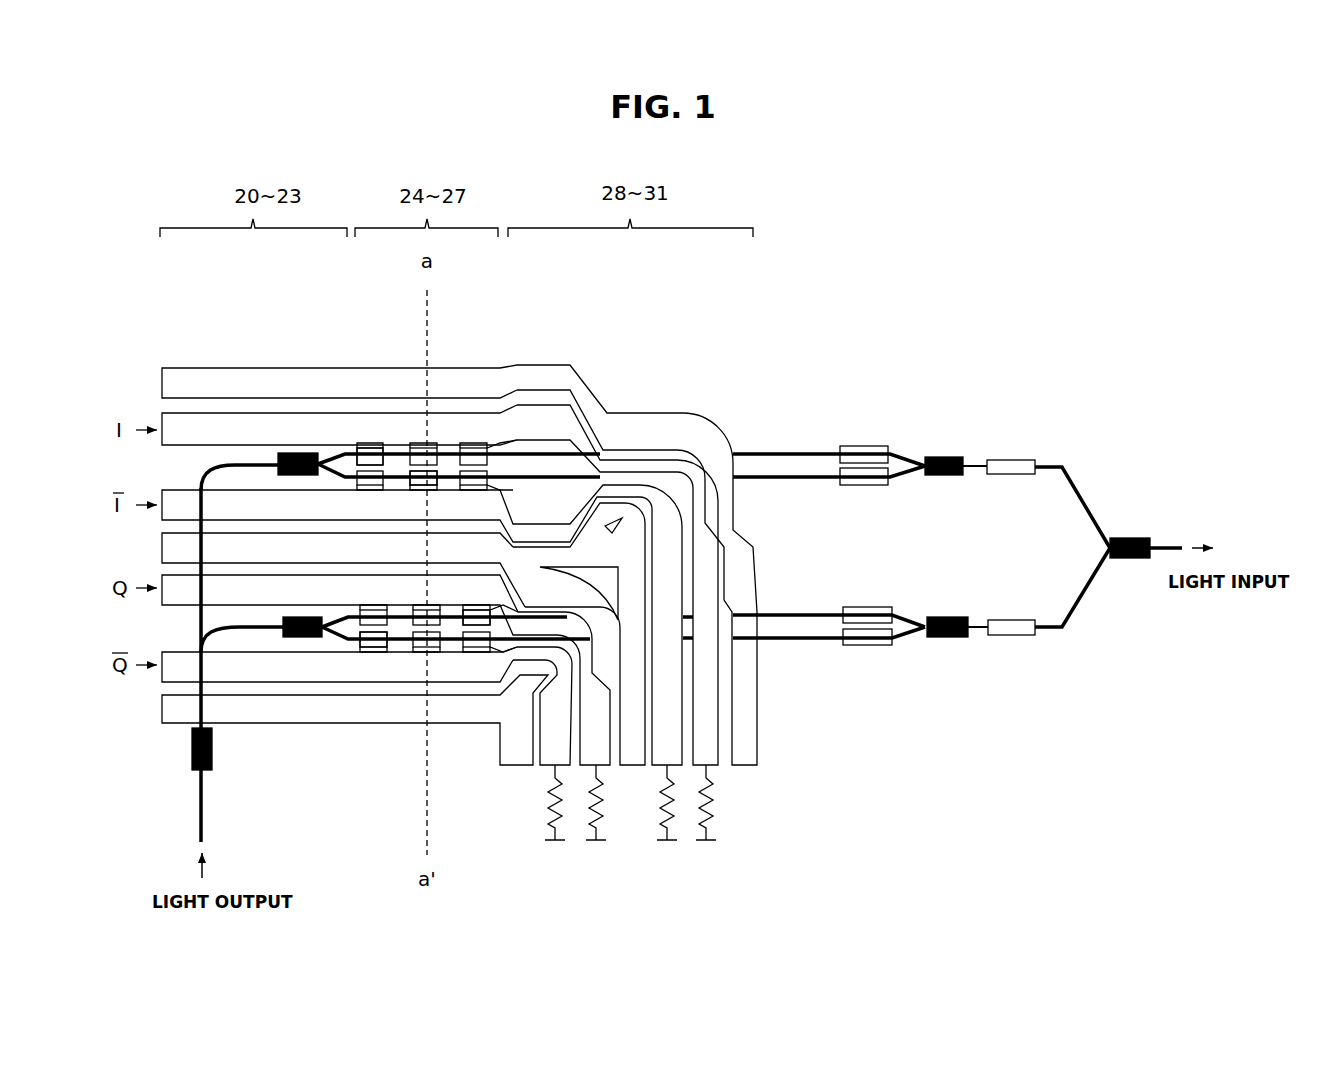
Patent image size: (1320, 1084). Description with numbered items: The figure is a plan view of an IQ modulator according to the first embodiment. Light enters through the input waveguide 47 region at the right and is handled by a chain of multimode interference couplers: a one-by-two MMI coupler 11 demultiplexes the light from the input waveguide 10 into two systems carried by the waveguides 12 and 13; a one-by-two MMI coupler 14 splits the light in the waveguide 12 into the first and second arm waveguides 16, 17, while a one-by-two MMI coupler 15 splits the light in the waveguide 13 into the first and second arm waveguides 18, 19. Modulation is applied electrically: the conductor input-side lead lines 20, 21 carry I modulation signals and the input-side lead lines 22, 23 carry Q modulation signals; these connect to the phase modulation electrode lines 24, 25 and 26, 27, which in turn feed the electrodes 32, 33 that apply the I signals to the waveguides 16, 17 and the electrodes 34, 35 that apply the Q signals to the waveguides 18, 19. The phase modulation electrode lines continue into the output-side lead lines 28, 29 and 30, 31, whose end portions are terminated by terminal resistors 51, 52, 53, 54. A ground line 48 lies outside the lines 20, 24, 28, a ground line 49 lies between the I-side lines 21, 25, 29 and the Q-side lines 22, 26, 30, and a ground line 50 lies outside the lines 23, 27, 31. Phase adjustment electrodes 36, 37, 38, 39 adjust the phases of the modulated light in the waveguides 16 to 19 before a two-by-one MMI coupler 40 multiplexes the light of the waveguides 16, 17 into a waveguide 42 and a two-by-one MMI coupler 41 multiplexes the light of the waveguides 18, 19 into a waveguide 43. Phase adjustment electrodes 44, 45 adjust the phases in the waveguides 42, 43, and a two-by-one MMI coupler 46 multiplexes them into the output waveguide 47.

The input waveguide 10 is at (198, 827).
The 1x2 MMI coupler 11 is at (196, 773).
The waveguide 12 is at (198, 622).
The waveguide 13 is at (237, 632).
The 1x2 MMI coupler 14 is at (293, 450).
The 1x2 MMI coupler 15 is at (303, 637).
The first arm waveguide 16 is at (342, 452).
The second arm waveguide 17 is at (402, 471).
The first arm waveguide 18 is at (348, 620).
The second arm waveguide 19 is at (403, 645).
The first input-side lead line 20 is at (202, 420).
The second input-side lead line 21 is at (253, 505).
The first input-side lead line 22 is at (266, 592).
The second input-side lead line 23 is at (243, 668).
The first phase modulation electrode line 24 is at (445, 424).
The second phase modulation electrode line 25 is at (485, 472).
The first phase modulation electrode line 26 is at (444, 593).
The second phase modulation electrode line 27 is at (483, 668).
The first output-side lead line 28 is at (561, 427).
The second output-side lead line 29 is at (554, 505).
The first output-side lead line 30 is at (524, 608).
The second output-side lead line 31 is at (521, 652).
The first electrode 32 is at (370, 458).
The second electrode 33 is at (448, 505).
The first electrode 34 is at (479, 598).
The second electrode 35 is at (377, 640).
The phase adjustment electrode 36 is at (851, 443).
The phase adjustment electrode 37 is at (849, 487).
The phase adjustment electrode 38 is at (851, 606).
The phase adjustment electrode 39 is at (850, 647).
The 2x1 MMI coupler 40 is at (945, 453).
The 2x1 MMI coupler 41 is at (945, 614).
The waveguide 42 is at (978, 462).
The waveguide 43 is at (979, 622).
The phase adjustment electrode 44 is at (1019, 459).
The phase adjustment electrode 45 is at (1019, 620).
The 2x1 MMI coupler 46 is at (1122, 536).
The output waveguide 47 is at (1166, 545).
The ground line 48 is at (663, 421).
The ground line 49 is at (646, 500).
The ground line 50 is at (227, 714).
The terminal resistor 51 is at (720, 818).
The terminal resistor 52 is at (677, 815).
The terminal resistor 53 is at (608, 815).
The terminal resistor 54 is at (566, 815).